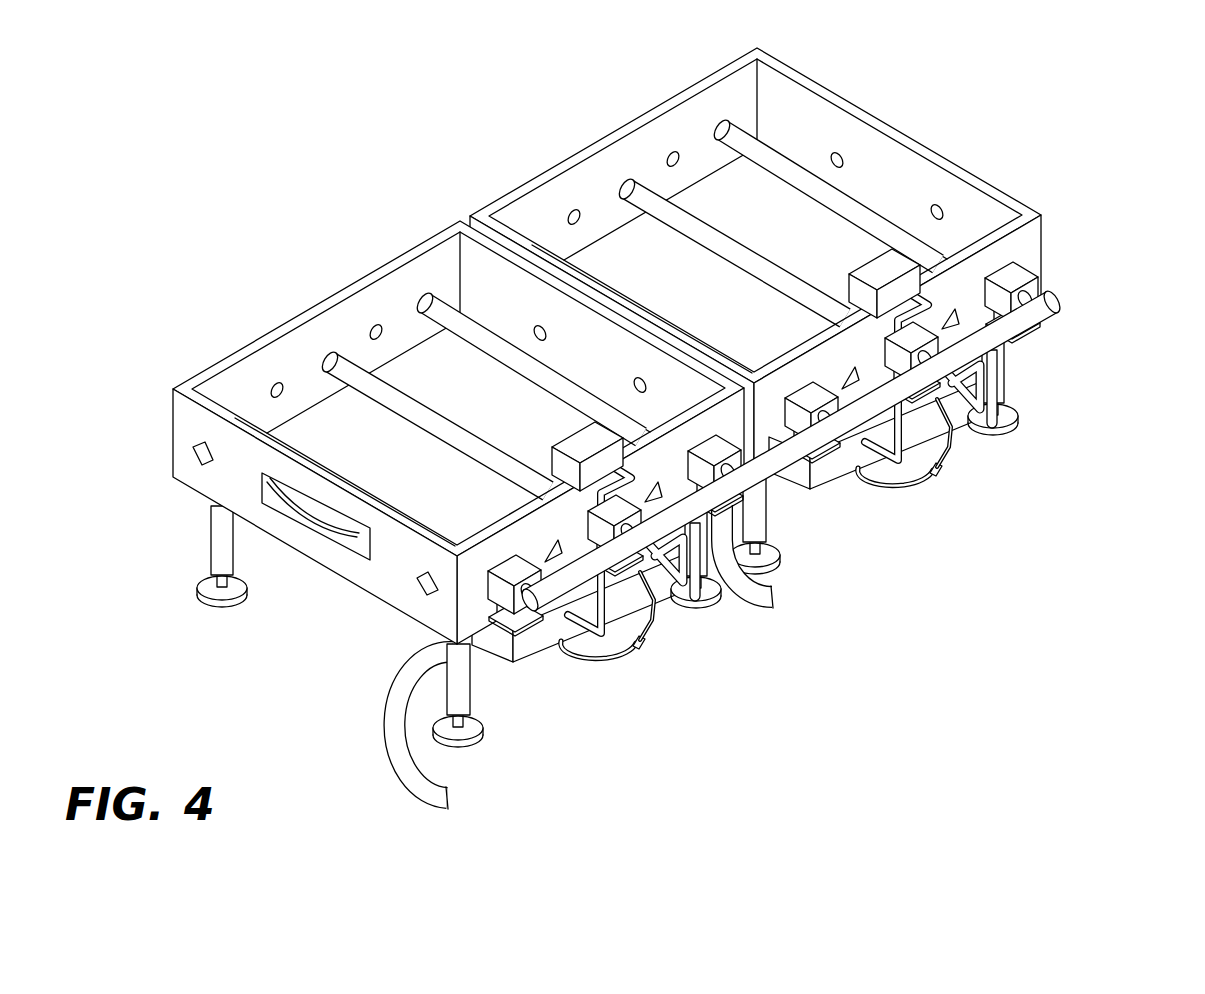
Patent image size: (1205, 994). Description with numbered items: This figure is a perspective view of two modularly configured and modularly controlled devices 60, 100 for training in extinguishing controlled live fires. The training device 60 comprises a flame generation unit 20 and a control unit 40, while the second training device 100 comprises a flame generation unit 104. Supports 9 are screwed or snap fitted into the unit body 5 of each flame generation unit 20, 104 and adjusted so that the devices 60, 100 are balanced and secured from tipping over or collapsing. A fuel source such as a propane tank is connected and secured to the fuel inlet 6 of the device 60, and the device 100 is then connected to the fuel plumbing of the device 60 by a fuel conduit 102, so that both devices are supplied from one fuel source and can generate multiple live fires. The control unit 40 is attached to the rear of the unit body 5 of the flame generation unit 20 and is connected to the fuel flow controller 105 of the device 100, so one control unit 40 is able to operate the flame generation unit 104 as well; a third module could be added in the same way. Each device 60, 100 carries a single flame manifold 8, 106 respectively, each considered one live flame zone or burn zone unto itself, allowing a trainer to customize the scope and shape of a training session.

The unit body 5 is at (152, 411).
The fuel inlet 6 is at (393, 708).
The flame manifold 8 is at (347, 363).
The supports 9 is at (216, 559).
The flame generation unit 20 is at (268, 644).
The control unit 40 is at (643, 648).
The training device 60 is at (168, 240).
The training device 100 is at (825, 317).
The fuel conduit 102 is at (778, 463).
The flame generation unit 104 is at (897, 343).
The fuel flow controller 105 is at (878, 483).
The flame manifold 106 is at (723, 184).